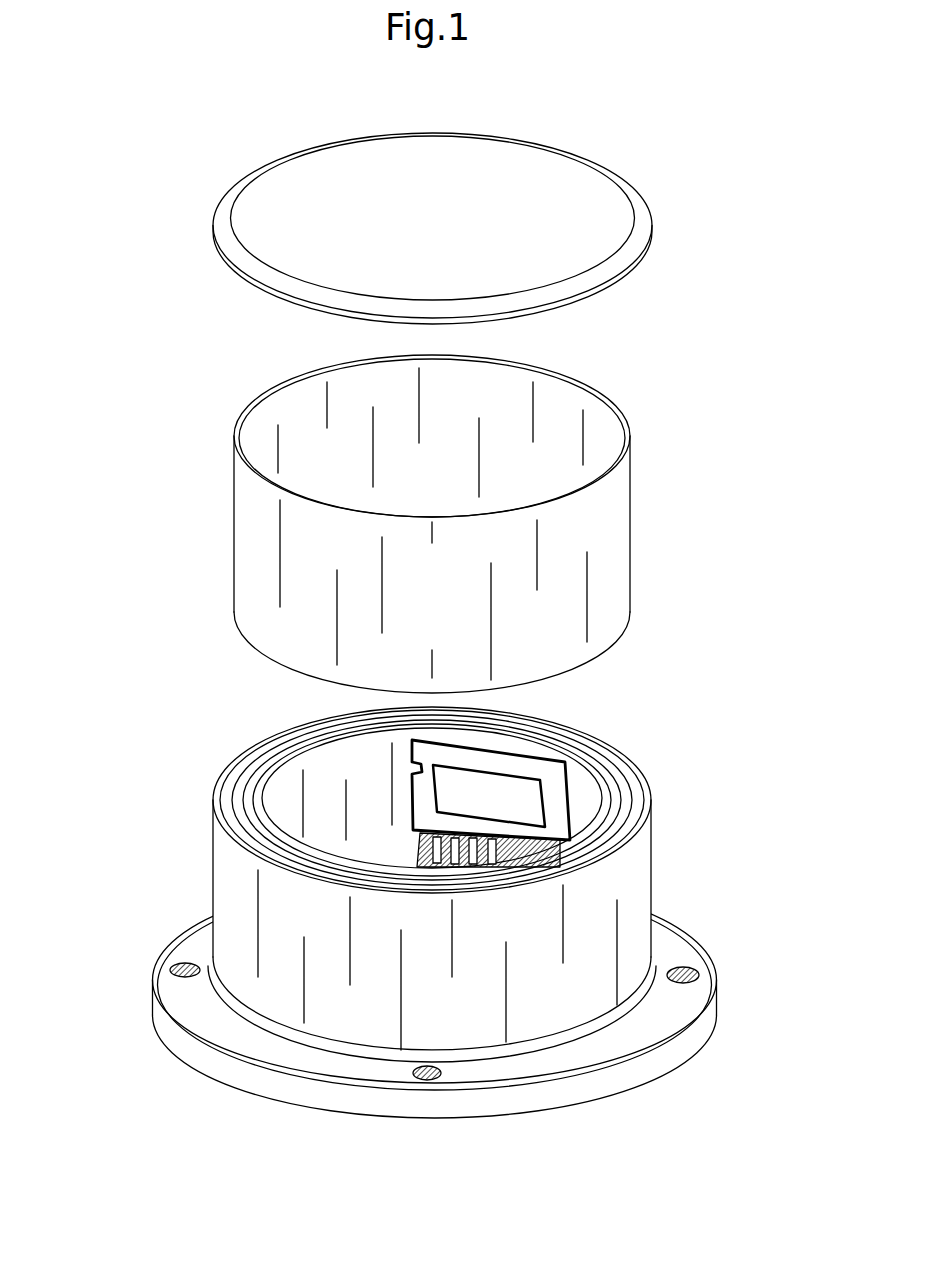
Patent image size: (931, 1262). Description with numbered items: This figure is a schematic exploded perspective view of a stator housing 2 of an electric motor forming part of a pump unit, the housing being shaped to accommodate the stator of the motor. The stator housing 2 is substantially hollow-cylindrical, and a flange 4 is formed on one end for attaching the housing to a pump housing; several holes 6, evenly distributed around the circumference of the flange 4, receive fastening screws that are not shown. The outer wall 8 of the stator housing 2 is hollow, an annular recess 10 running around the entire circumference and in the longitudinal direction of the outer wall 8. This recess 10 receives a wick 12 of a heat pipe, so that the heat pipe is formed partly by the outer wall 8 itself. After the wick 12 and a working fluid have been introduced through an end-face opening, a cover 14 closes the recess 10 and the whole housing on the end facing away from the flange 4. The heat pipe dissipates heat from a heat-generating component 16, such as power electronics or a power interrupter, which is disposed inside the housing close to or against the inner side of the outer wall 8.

The stator housing 2 is at (660, 863).
The flange 4 is at (262, 1098).
The holes 6 is at (168, 968).
The outer wall 8 is at (233, 876).
The annular recess 10 is at (242, 792).
The wick 12 is at (450, 617).
The cover 14 is at (450, 245).
The heat-generating component 16 is at (525, 797).